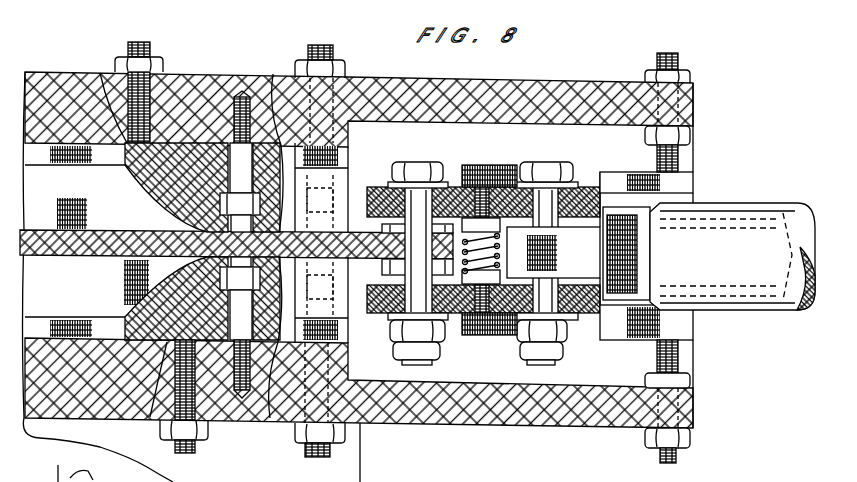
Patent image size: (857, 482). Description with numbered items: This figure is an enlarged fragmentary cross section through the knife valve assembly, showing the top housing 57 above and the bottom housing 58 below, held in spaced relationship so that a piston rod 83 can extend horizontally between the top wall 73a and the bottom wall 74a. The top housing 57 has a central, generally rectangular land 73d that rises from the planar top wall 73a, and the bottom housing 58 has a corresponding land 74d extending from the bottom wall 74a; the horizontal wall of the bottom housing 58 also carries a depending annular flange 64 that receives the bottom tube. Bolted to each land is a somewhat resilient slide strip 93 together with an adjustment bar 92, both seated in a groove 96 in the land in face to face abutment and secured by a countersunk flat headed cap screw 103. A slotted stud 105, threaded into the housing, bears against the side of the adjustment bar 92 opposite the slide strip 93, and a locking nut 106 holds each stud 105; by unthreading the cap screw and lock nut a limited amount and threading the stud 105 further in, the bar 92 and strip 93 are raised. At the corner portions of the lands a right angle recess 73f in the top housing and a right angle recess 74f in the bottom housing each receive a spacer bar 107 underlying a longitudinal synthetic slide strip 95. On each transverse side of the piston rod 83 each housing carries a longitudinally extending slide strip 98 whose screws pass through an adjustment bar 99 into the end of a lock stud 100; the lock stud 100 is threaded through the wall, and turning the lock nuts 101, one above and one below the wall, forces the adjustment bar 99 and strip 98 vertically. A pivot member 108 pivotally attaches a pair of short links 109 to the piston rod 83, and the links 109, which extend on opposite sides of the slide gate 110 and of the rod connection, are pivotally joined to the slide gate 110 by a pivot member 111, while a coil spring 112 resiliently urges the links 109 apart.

The top housing 57 is at (703, 132).
The bottom housing 58 is at (702, 407).
The annular flange 64 is at (348, 477).
The top wall 73a is at (590, 90).
The land 73d is at (349, 146).
The right angle recess 73f is at (88, 163).
The bottom wall 74a is at (495, 429).
The land 74d is at (349, 377).
The right angle recess 74f is at (65, 317).
The piston rod 83 is at (760, 312).
The adjustment bar 92 is at (340, 339).
The slide strip 93 is at (330, 198).
The longitudinal synthetic slide strip 95 is at (123, 270).
The groove 96 is at (300, 152).
The slide strip 98 is at (595, 278).
The adjustment bar 99 is at (680, 178).
The lock stud 100 is at (676, 455).
The lock nut 101 is at (645, 436).
The countersunk flat headed cap screw 103 is at (247, 96).
The stud 105 is at (142, 43).
The locking nut 106 is at (348, 67).
The spacer bar 107 is at (40, 152).
The pivot member 108 is at (582, 148).
The short link 109 is at (592, 188).
The slide gate 110 is at (150, 240).
The pivot member 111 is at (432, 160).
The coil spring 112 is at (452, 182).